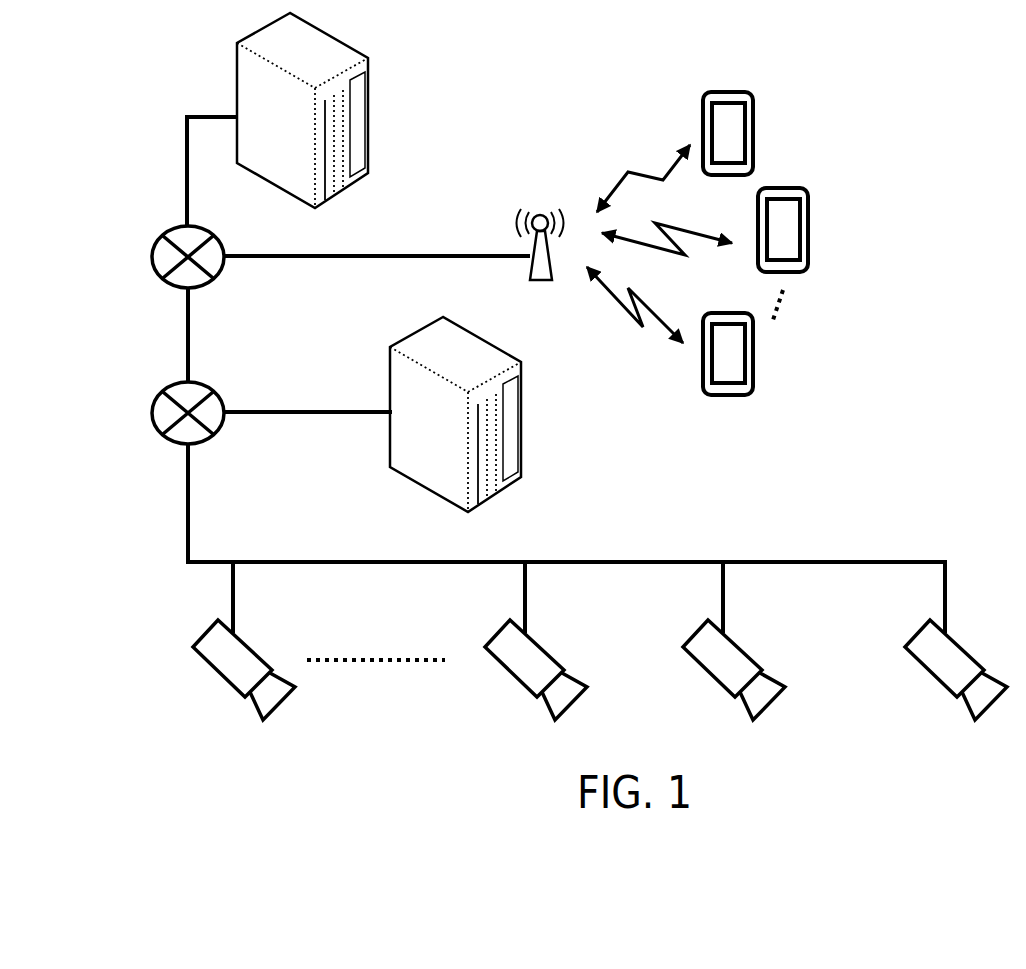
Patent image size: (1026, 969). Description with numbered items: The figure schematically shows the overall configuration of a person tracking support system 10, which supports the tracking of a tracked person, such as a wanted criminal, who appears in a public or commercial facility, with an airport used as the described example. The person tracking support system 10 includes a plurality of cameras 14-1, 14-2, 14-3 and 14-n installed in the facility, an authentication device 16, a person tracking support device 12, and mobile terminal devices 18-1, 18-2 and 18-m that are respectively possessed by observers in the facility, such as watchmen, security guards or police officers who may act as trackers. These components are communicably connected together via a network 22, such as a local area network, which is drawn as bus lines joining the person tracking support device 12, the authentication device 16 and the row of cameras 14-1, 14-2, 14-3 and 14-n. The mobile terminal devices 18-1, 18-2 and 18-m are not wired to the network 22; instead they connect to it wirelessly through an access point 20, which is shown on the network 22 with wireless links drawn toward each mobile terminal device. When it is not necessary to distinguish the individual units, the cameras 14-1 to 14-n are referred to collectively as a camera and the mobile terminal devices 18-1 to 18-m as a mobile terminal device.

The person tracking support system 10 is at (158, 62).
The person tracking support device 12 is at (368, 148).
The camera 14-1 is at (928, 672).
The camera 14-2 is at (707, 675).
The camera 14-3 is at (510, 675).
The camera 14-n is at (213, 668).
The authentication device 16 is at (522, 460).
The mobile terminal device 18-1 is at (753, 133).
The mobile terminal device 18-2 is at (808, 229).
The mobile terminal device 18-m is at (753, 353).
The access point 20 is at (550, 260).
The network 22 is at (152, 258).